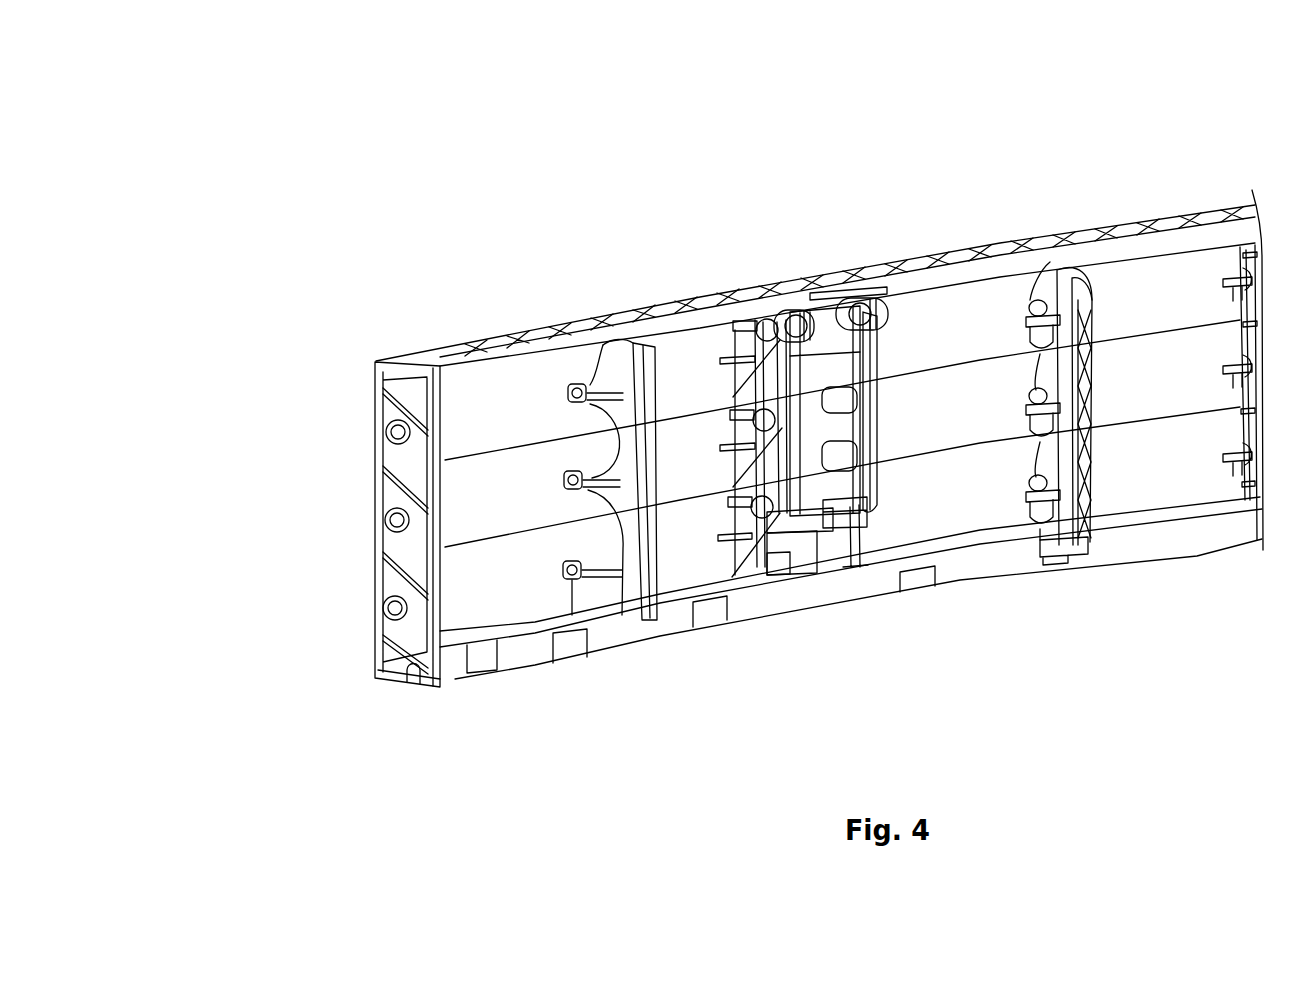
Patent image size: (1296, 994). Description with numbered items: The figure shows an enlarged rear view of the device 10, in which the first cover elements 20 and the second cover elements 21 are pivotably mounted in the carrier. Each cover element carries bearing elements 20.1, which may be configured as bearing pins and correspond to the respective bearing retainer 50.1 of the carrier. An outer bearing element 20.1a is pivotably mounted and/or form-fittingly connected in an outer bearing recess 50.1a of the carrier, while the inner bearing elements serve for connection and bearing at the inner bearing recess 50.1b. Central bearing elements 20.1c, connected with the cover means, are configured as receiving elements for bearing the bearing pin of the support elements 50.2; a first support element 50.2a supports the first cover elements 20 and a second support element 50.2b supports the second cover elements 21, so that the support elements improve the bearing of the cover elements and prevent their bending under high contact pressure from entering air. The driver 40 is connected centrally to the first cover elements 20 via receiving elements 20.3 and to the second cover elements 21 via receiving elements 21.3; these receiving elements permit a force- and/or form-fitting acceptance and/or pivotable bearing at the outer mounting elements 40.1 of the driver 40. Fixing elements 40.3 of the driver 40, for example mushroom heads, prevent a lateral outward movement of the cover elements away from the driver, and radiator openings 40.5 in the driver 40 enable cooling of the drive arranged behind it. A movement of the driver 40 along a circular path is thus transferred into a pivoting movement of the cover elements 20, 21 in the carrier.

The device 10 is at (944, 161).
The first cover elements 20 is at (507, 490).
The bearing elements 20.1 is at (572, 585).
The outer bearing element 20.1a is at (403, 437).
The central bearing element 20.1c is at (1251, 370).
The receiving elements 20.3 is at (722, 566).
The second cover elements 21 is at (1167, 455).
The receiving elements 21.3 is at (853, 520).
The driver 40 is at (813, 377).
The outer mounting elements 40.1 is at (856, 513).
The fixing elements 40.3 is at (723, 567).
The radiator openings 40.5 is at (838, 556).
The bearing retainer 50.1 is at (392, 601).
The outer bearing recess 50.1a is at (396, 520).
The inner bearing recess 50.1b is at (887, 334).
The support elements 50.2 is at (619, 606).
The first support element 50.2a is at (610, 479).
The second support element 50.2b is at (1063, 547).